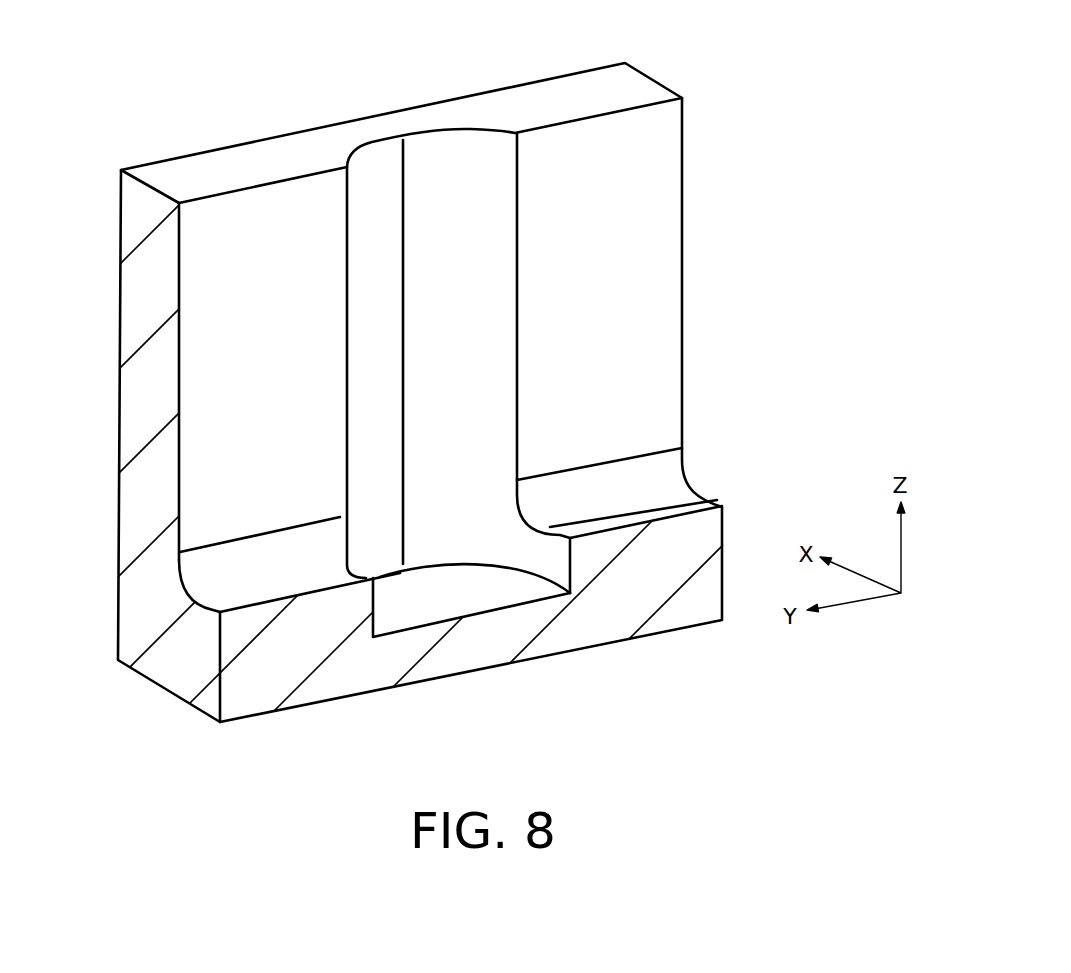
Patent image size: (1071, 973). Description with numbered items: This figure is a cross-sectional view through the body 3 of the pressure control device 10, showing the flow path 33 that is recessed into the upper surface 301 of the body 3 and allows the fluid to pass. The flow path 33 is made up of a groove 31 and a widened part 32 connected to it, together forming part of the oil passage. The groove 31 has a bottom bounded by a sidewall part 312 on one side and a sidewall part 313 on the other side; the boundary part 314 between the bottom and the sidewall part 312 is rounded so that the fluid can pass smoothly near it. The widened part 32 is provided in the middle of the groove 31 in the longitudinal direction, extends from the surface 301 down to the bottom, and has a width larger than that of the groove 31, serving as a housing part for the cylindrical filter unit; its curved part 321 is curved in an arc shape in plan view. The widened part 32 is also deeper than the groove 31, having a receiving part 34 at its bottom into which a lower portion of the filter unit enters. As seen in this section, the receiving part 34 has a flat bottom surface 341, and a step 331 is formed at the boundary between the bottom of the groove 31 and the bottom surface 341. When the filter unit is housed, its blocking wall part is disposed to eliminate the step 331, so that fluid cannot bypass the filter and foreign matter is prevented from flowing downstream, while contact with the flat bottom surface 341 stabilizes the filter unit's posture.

The pressure control device 10 is at (760, 83).
The body 3 is at (672, 82).
The upper surface 301 is at (178, 177).
The flow path 33 is at (331, 84).
The groove 31 is at (294, 175).
The widened part 32 is at (350, 151).
The sidewall part 312 is at (217, 350).
The sidewall part 313 is at (311, 583).
The boundary part 314 is at (201, 608).
The curved part 321 is at (443, 138).
The step 331 is at (363, 576).
The receiving part 34 is at (568, 573).
The bottom surface 341 is at (558, 585).